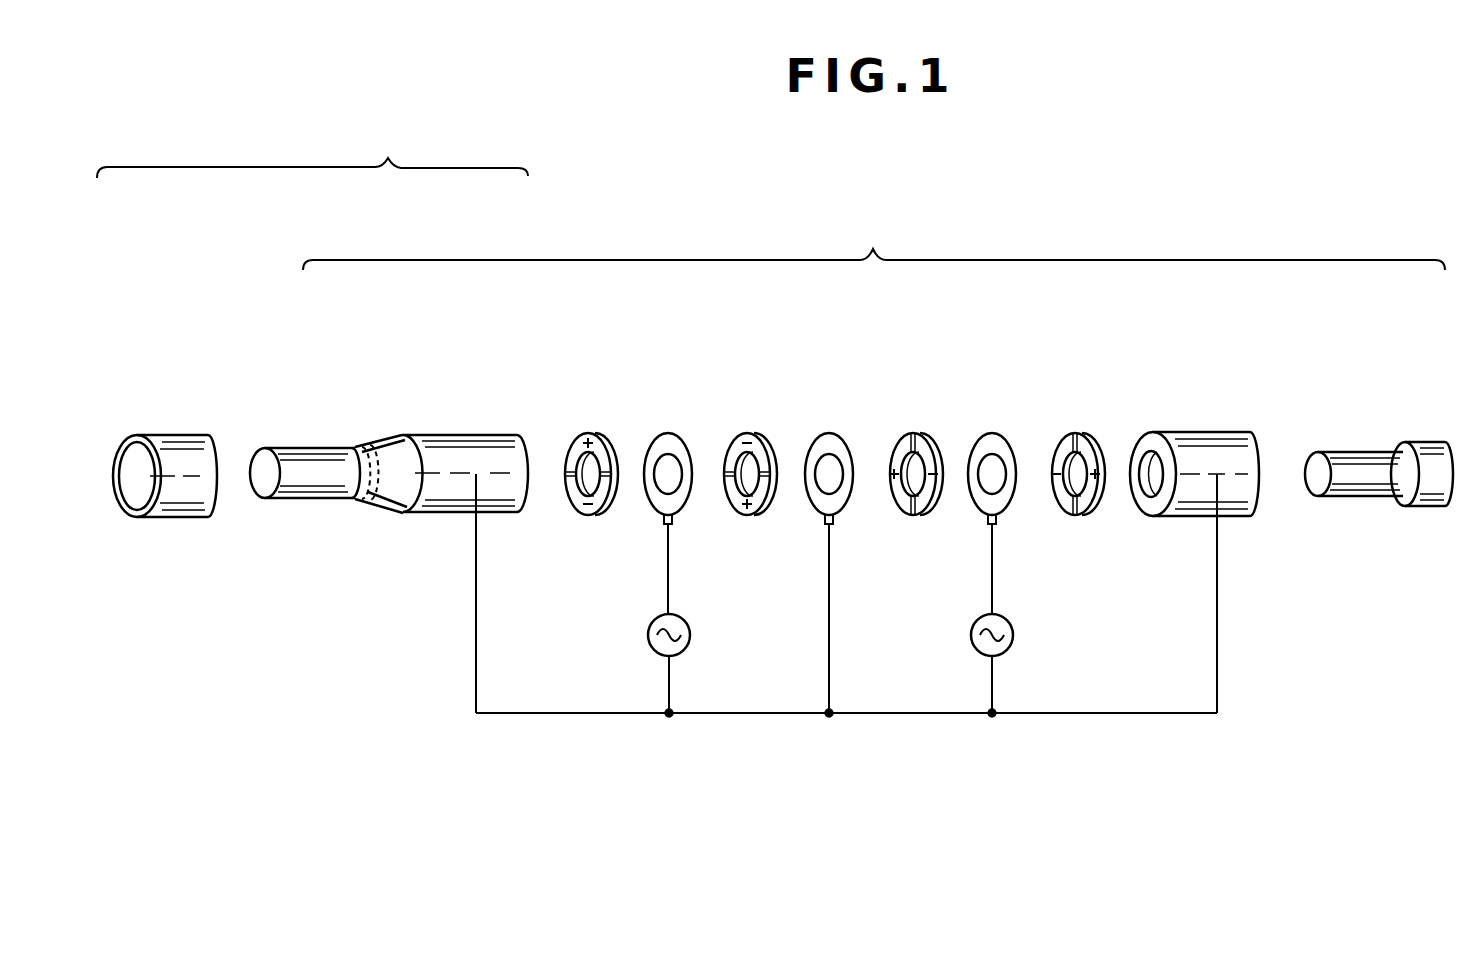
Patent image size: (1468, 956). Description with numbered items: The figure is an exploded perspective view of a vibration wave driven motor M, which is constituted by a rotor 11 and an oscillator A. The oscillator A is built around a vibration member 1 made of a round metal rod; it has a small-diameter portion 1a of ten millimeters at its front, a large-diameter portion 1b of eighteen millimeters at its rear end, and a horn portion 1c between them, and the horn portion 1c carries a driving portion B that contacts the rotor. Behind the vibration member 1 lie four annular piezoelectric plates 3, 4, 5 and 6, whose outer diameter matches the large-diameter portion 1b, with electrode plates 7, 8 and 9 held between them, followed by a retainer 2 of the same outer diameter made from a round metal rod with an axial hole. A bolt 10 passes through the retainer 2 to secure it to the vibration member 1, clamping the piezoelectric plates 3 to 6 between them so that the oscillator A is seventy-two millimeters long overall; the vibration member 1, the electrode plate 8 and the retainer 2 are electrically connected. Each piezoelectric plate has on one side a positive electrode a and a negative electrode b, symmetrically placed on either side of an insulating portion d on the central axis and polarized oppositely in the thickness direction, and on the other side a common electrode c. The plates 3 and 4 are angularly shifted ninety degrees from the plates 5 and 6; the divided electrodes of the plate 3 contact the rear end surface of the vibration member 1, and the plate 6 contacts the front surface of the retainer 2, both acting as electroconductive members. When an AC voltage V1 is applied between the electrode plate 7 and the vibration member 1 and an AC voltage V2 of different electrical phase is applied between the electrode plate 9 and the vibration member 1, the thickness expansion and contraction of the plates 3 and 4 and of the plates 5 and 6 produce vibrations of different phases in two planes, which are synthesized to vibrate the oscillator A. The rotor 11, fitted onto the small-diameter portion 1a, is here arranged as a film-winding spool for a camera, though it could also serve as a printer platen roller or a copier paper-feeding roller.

The vibration member 1 is at (447, 435).
The small-diameter portion 1a is at (297, 480).
The large-diameter portion 1b is at (446, 500).
The horn portion 1c is at (386, 497).
The driving portion B is at (366, 447).
The retainer 2 is at (1186, 432).
The annular piezoelectric plate 3 is at (597, 433).
The annular piezoelectric plate 4 is at (755, 434).
The annular piezoelectric plate 5 is at (922, 434).
The annular piezoelectric plate 6 is at (1083, 434).
The electrode plate 7 is at (673, 433).
The electrode plate 8 is at (830, 433).
The electrode plate 9 is at (994, 433).
The bolt 10 is at (1430, 452).
The rotor 11 is at (172, 443).
The positive electrode a is at (577, 437).
The negative electrode b is at (589, 514).
The common electrode c is at (612, 462).
The insulating portion d is at (568, 478).
The AC voltage V1 is at (654, 654).
The AC voltage V2 is at (977, 654).
The motor M is at (312, 154).
The oscillator A is at (874, 246).